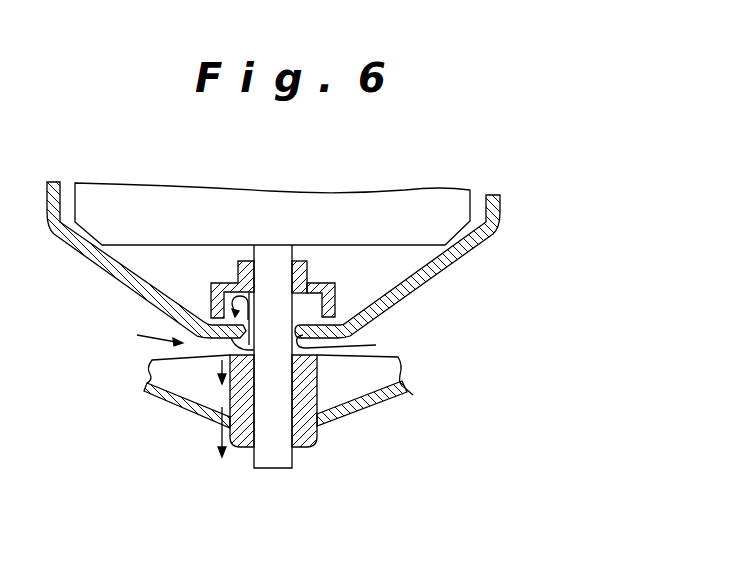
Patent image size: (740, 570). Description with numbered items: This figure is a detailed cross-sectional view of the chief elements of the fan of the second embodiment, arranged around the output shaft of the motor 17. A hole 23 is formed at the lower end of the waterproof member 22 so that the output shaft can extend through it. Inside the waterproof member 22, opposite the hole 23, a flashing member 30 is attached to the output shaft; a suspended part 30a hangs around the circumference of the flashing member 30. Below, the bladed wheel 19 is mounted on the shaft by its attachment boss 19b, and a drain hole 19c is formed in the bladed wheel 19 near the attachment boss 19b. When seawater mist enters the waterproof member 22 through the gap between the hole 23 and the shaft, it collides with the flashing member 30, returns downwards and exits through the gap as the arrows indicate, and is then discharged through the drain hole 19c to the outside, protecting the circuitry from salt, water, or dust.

The motor 17 is at (360, 207).
The waterproof member 22 is at (497, 224).
The flashing member 30 is at (320, 282).
The suspended part 30a is at (312, 287).
The hole 23 is at (376, 345).
The bladed wheel 19 is at (370, 398).
The attachment boss 19b is at (305, 447).
The drain hole 19c is at (214, 423).